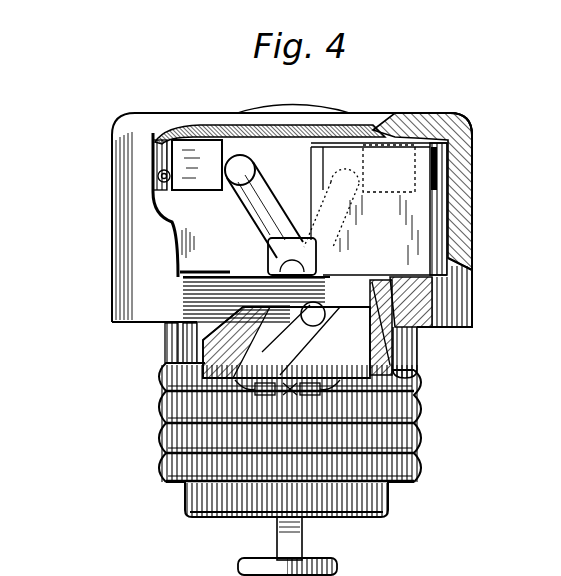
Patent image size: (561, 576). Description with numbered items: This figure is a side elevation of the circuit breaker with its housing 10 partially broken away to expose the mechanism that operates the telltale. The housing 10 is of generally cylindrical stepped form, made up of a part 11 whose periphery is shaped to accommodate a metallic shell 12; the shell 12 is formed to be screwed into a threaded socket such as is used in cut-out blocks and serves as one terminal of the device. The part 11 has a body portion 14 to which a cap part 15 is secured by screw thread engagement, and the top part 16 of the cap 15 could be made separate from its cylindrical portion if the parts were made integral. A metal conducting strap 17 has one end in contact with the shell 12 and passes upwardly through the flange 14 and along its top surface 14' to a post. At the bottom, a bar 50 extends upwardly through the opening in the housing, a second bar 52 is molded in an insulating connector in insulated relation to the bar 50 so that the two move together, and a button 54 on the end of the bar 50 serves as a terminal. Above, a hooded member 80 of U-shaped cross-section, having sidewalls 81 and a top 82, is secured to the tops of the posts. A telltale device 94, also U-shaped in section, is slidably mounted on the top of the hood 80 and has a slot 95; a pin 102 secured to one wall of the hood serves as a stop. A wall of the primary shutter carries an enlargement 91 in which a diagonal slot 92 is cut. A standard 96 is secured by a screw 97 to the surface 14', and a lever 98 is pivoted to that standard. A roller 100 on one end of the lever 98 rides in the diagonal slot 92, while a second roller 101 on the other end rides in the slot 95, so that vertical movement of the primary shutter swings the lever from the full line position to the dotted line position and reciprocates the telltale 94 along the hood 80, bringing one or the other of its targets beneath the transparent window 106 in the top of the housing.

The housing 10 is at (476, 278).
The housing part 11 is at (410, 340).
The metallic shell 12 is at (420, 470).
The body portion 14 is at (420, 235).
The top surface of flange 14' is at (484, 249).
The cap part 15 is at (472, 170).
The top part of cap 16 is at (414, 117).
The metal conducting strap 17 is at (192, 268).
The bar 50 is at (303, 540).
The second bar 52 is at (287, 388).
The button 54 is at (338, 567).
The hooded member 80 is at (452, 118).
The sidewalls of hooded member 81 is at (388, 205).
The top of hooded member 82 is at (390, 141).
The enlargement 91 is at (410, 354).
The diagonal slot 92 is at (365, 333).
The telltale device 94 is at (180, 146).
The slot in telltale 95 is at (232, 152).
The standard 96 is at (317, 252).
The screw 97 is at (331, 208).
The lever 98 is at (250, 214).
The roller 100 is at (316, 312).
The second roller 101 is at (233, 140).
The pin 102 is at (158, 176).
The transparent window 106 is at (292, 108).